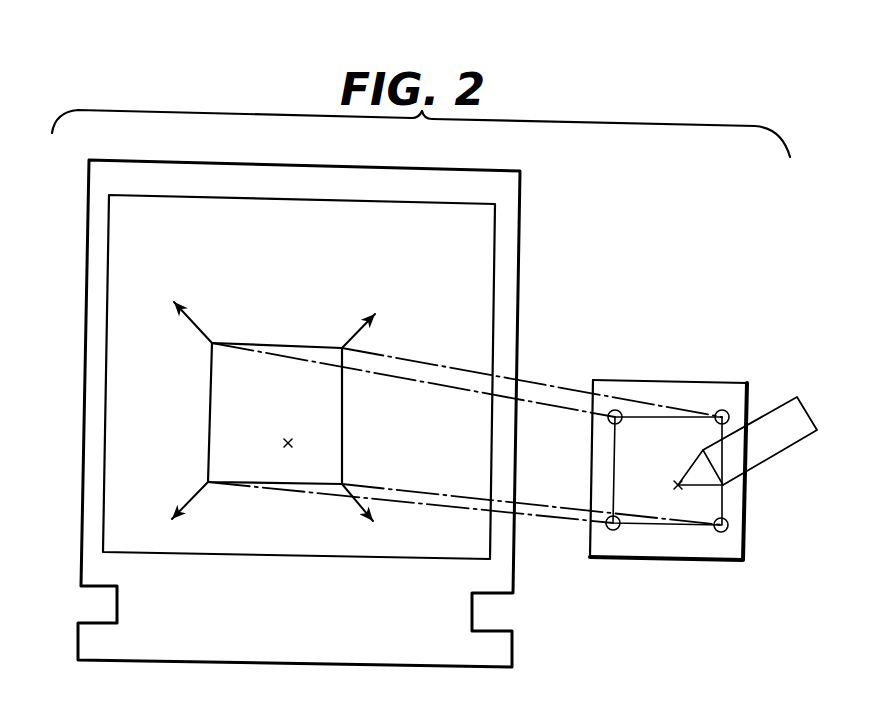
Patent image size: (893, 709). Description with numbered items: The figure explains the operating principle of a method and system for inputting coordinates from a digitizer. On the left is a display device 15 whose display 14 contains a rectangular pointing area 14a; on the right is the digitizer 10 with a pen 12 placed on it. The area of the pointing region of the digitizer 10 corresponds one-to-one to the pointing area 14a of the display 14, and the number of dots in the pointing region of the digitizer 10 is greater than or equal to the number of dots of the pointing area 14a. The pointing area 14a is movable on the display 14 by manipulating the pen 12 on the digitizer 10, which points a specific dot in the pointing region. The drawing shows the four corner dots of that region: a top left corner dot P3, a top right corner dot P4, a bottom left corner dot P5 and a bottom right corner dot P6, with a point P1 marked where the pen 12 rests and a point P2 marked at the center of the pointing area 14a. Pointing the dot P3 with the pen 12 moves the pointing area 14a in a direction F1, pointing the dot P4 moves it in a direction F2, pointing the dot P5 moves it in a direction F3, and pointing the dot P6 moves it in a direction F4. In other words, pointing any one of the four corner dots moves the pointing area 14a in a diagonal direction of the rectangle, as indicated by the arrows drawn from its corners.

The display device 15 is at (166, 154).
The display 14 is at (441, 204).
The pointing area 14a is at (212, 414).
The digitizer 10 is at (670, 388).
The pen 12 is at (791, 446).
The point P1 is at (686, 464).
The point P2 is at (273, 420).
The top left corner dot P3 is at (610, 424).
The top right corner dot P4 is at (734, 402).
The bottom left corner dot P5 is at (623, 528).
The bottom right corner dot P6 is at (725, 532).
The direction F1 is at (176, 322).
The direction F2 is at (353, 316).
The direction F3 is at (191, 516).
The direction F4 is at (343, 517).